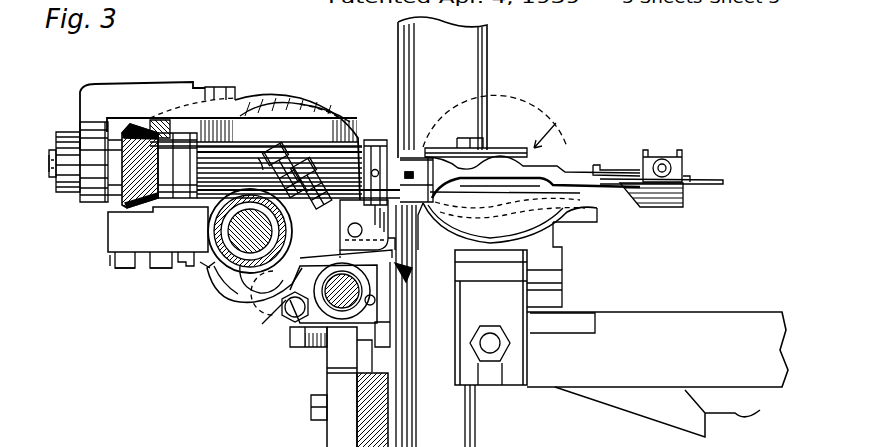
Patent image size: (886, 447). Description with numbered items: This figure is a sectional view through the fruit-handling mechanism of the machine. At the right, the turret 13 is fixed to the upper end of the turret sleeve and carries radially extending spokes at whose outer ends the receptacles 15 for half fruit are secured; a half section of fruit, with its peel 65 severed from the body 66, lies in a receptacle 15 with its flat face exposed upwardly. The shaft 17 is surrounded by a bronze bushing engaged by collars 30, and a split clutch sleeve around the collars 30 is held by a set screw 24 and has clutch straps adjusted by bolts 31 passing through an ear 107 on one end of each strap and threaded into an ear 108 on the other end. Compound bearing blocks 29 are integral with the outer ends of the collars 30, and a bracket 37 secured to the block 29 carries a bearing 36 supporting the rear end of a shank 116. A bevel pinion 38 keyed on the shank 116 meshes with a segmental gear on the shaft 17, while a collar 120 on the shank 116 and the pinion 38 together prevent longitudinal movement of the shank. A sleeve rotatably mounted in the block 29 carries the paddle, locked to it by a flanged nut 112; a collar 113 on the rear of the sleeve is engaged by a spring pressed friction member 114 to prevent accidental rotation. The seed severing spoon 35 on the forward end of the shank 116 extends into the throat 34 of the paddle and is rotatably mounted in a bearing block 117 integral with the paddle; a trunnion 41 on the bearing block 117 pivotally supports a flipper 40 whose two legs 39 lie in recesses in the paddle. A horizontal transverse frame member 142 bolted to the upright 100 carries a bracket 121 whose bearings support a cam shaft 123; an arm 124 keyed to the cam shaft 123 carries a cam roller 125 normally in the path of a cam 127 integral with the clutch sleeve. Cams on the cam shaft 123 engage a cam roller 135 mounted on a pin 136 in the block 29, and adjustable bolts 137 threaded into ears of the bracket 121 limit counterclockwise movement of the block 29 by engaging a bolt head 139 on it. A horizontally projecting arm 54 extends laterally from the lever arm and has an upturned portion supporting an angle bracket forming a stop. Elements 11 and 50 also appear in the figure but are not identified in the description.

The frame / support bracket 11 is at (494, 287).
The turret 13 is at (668, 313).
The receptacles for half fruit 15 is at (568, 256).
The shaft 17 is at (210, 241).
The set screw 24 is at (196, 213).
The compound bearing blocks 29 is at (238, 133).
The collars 30 is at (236, 292).
The bolts 31 is at (260, 160).
The throat 34 is at (606, 196).
The turnable cutting means (spoon) 35 is at (548, 162).
The bearing 36 is at (88, 195).
The bracket 37 is at (143, 84).
The bevel pinion 38 is at (132, 200).
The legs 39 is at (600, 165).
The flipper 40 is at (702, 178).
The trunnion 41 is at (665, 158).
The direction arrow 50 is at (551, 127).
The horizontally projecting arm 54 is at (408, 278).
The peel 65 is at (560, 222).
The body 66 is at (528, 113).
The upright 100 is at (470, 65).
The ear 107 is at (314, 160).
The ear 108 is at (290, 137).
The flanged nut 112 is at (378, 140).
The collar 113 is at (182, 120).
The spring pressed friction member 114 is at (158, 264).
The shank 116 is at (50, 188).
The bearing block 117 is at (655, 157).
The collar 120 is at (72, 130).
The bracket 121 is at (332, 411).
The cam shaft 123 is at (298, 347).
The arm 124 is at (276, 304).
The cam roller 125 is at (210, 267).
The cam 127 is at (216, 290).
The cam roller 135 is at (392, 260).
The pin 136 is at (400, 236).
The adjustable bolts 137 is at (300, 362).
The bolt head 139 is at (112, 266).
The horizontal transverse frame member 142 is at (362, 431).